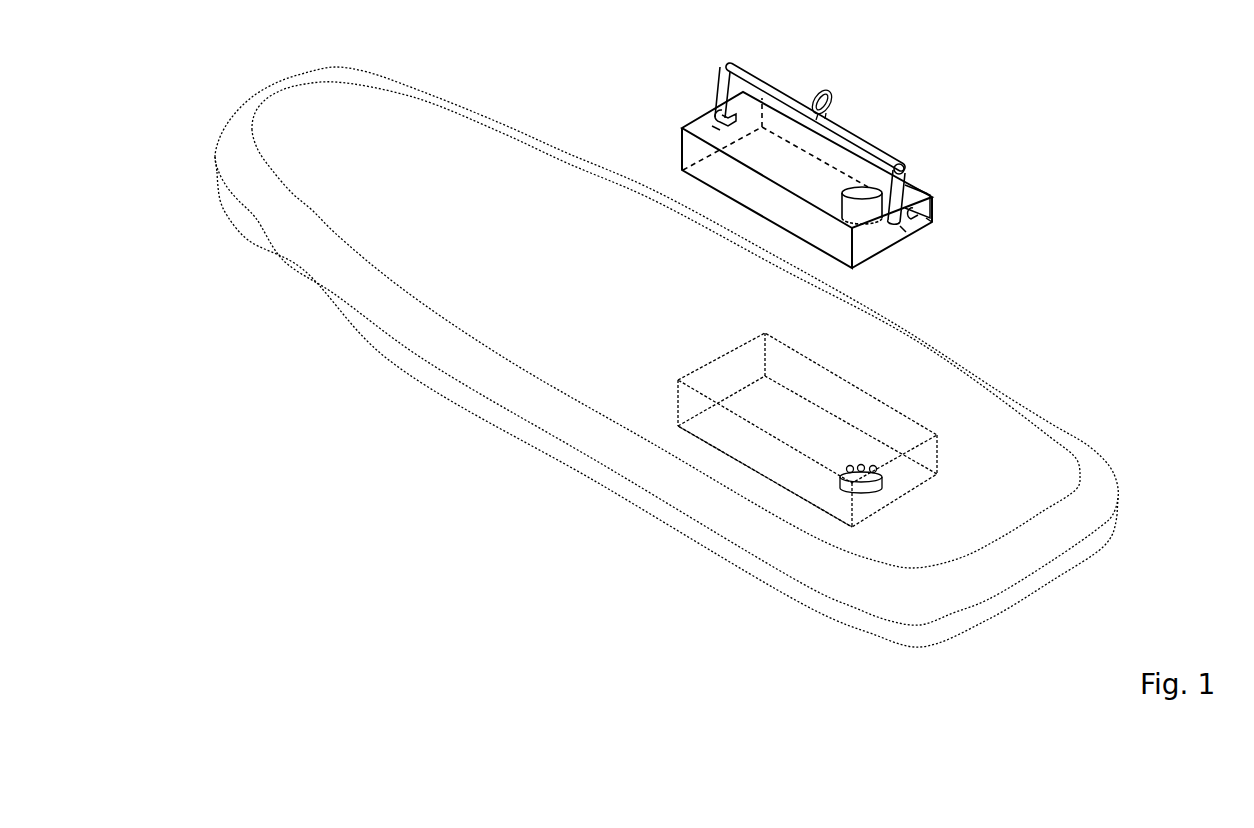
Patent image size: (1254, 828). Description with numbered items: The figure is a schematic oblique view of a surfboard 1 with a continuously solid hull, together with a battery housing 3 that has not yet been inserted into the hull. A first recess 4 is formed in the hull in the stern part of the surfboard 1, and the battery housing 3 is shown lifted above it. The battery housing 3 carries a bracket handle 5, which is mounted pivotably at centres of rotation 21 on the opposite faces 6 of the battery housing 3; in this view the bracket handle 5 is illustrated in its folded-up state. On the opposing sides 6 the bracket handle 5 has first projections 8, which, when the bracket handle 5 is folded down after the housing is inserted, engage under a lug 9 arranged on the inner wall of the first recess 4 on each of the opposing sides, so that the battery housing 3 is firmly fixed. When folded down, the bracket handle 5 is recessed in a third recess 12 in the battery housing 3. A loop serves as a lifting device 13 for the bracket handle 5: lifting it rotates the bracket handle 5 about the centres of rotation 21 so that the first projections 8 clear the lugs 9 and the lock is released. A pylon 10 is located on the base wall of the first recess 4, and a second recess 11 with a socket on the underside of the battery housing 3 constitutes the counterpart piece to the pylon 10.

The surfboard 1 is at (430, 266).
The battery housing 3 is at (723, 176).
The first recess 4 is at (727, 437).
The bracket handle 5 is at (883, 147).
The opposite faces of the battery housing 6 is at (712, 128).
The first projections 8 is at (932, 224).
The lug 9 is at (722, 381).
The pylon 10 is at (848, 527).
The second recess 11 is at (866, 205).
The third recess 12 is at (928, 196).
The lifting device 13 is at (833, 95).
The centres of rotation 21 is at (719, 114).